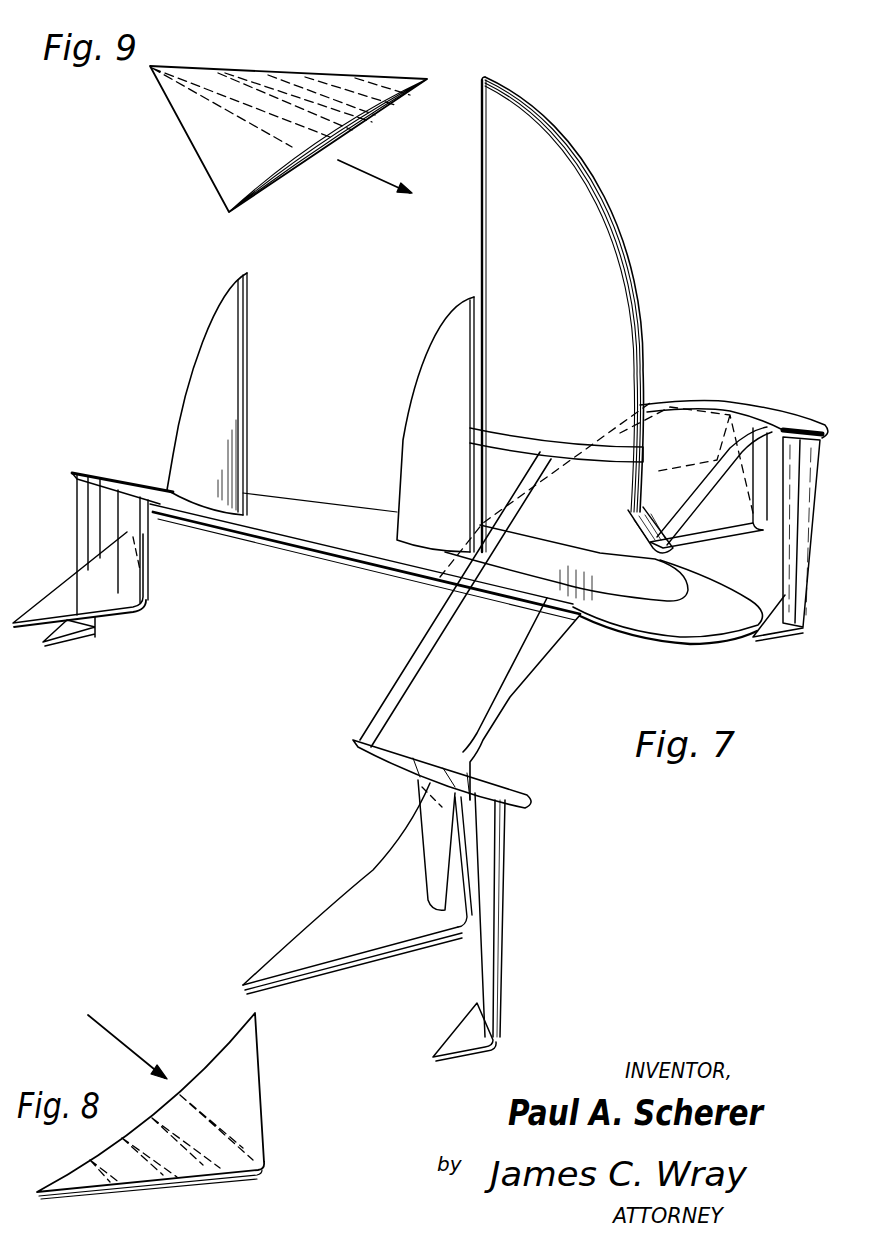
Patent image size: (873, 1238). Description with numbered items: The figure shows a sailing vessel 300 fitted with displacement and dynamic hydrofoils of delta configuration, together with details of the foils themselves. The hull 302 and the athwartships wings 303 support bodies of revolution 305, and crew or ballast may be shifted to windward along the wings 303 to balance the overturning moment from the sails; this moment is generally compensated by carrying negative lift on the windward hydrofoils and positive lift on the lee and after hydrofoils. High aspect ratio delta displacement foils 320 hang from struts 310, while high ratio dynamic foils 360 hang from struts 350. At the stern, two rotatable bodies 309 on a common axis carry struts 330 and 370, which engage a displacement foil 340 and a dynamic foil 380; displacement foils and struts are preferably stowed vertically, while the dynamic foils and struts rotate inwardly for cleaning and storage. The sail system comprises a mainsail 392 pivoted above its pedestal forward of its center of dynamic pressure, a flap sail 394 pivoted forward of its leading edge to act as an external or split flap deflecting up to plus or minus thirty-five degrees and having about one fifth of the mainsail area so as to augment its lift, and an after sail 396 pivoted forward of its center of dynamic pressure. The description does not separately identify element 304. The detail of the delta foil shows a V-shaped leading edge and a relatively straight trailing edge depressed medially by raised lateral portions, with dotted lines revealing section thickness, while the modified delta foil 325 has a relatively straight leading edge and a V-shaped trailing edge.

In FIG. 7, the sailing vessel 300 is at (608, 200).
In FIG. 7, the hull 302 is at (323, 550).
In FIG. 7, the wings 303 is at (503, 670).
In FIG. 7, the mast 304 is at (440, 605).
In FIG. 7, the bodies of revolution 305 is at (397, 757).
In FIG. 7, the rotatable bodies 309 is at (113, 480).
In FIG. 7, the struts 310 is at (433, 838).
In FIG. 7, the delta displacement foils 320 is at (320, 930).
In FIG. 8, the delta displacement foils 320 is at (230, 1068).
In FIG. 9, the modified delta foil 325 is at (247, 68).
In FIG. 7, the strut 330 is at (140, 553).
In FIG. 7, the displacement foil 340 is at (103, 595).
In FIG. 7, the struts 350 is at (487, 917).
In FIG. 7, the dynamic foils 360 is at (457, 1043).
In FIG. 7, the strut 370 is at (82, 497).
In FIG. 7, the dynamic foil 380 is at (70, 633).
In FIG. 7, the mainsail 392 is at (493, 210).
In FIG. 7, the flap sail 394 is at (440, 330).
In FIG. 7, the after sail 396 is at (225, 398).